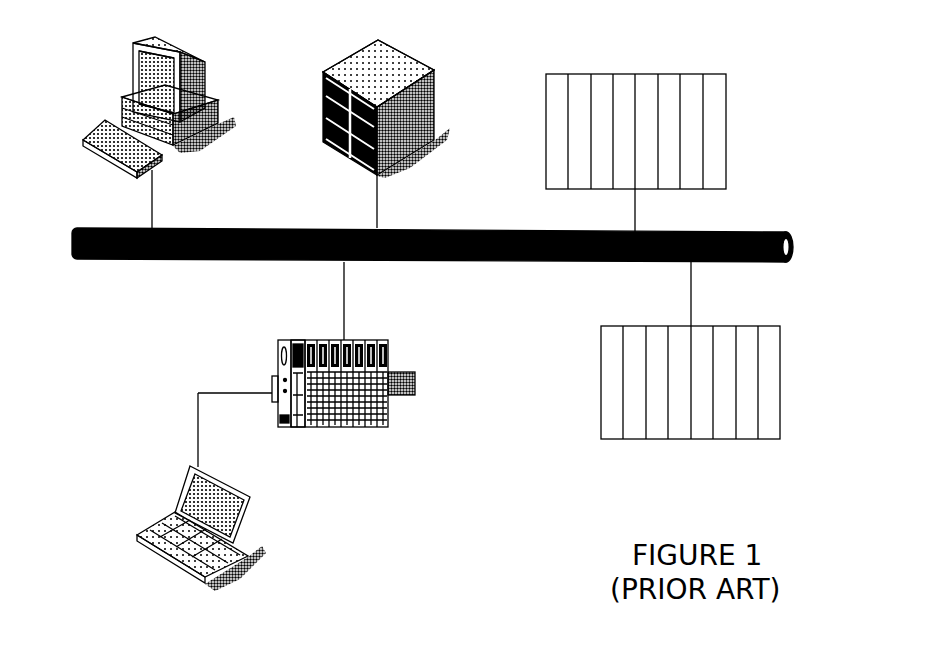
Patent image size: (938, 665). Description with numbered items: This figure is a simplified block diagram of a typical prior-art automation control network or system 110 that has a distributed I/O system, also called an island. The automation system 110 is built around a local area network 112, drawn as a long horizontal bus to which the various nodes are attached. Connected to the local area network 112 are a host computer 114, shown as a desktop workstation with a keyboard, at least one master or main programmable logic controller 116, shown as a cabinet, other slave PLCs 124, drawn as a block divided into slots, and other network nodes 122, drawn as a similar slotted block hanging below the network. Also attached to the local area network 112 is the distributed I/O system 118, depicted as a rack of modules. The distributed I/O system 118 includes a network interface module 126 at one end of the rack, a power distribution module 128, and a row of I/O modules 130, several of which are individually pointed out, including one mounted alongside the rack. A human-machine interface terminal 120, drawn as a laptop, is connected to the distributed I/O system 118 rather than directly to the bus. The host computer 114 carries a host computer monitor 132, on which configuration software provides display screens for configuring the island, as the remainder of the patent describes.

The automation control system 110 is at (820, 106).
The local area network 112 is at (436, 232).
The host computer 114 is at (146, 114).
The master programmable logic controller 116 is at (436, 108).
The distributed I/O system 118 is at (354, 373).
The human-machine interface terminal 120 is at (175, 497).
The other network nodes 122 is at (601, 385).
The other slave PLCs 124 is at (726, 133).
The network interface module 126 is at (278, 370).
The power distribution module 128 is at (303, 427).
The I/O modules 130 is at (468, 440).
The host computer monitor 132 is at (182, 77).